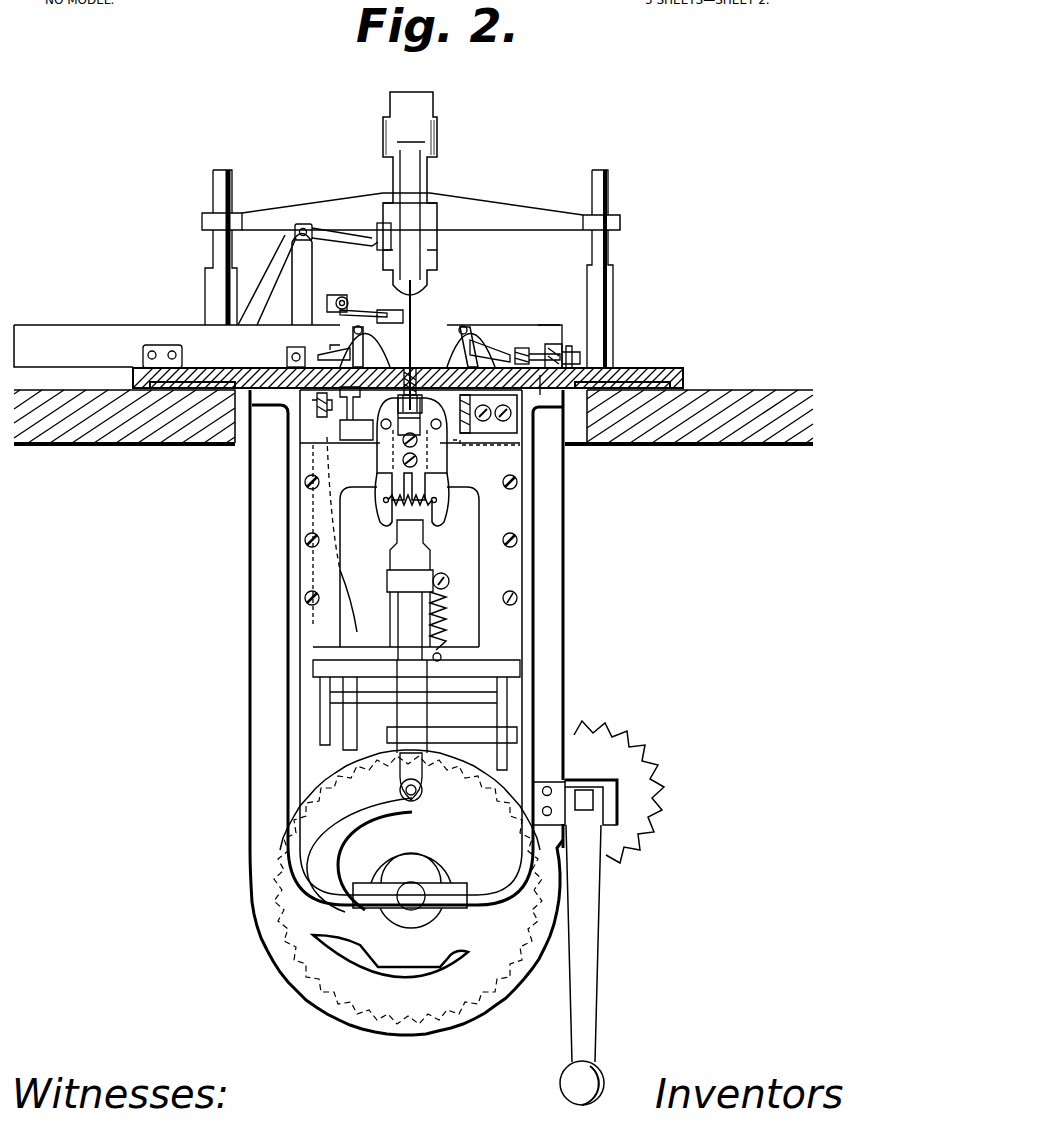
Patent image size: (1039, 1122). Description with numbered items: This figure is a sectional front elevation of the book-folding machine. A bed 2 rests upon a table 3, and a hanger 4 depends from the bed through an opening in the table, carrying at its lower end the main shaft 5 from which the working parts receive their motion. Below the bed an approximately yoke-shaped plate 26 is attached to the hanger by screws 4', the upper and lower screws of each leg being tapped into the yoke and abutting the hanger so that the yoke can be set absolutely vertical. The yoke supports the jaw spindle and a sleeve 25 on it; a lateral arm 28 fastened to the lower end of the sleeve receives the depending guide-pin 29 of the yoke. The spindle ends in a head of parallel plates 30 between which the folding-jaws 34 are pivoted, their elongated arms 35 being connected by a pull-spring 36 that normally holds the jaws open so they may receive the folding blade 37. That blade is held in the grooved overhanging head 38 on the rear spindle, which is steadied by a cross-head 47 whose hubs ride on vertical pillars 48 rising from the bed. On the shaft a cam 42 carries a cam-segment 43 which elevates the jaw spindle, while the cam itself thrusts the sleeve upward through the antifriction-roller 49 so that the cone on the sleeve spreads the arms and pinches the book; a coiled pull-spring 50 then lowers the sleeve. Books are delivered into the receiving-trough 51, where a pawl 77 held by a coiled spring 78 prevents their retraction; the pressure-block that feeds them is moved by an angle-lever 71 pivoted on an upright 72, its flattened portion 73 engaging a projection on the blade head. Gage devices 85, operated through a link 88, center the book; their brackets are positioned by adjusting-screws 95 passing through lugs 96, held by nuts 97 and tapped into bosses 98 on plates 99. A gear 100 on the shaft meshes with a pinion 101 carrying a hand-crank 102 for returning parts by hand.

The bed 2 is at (655, 382).
The table 3 is at (692, 430).
The hanger 4 is at (454, 619).
The screws 4' is at (382, 563).
The shaft 5 is at (413, 890).
The sleeve 25 is at (396, 567).
The yoke-shaped plate 26 is at (505, 568).
The lateral arm 28 is at (458, 745).
The guide-pin 29 is at (500, 767).
The parallel plates 30 is at (388, 447).
The folding-jaws 34 is at (410, 409).
The elongated arms 35 is at (385, 487).
The pull-spring 36 is at (432, 497).
The folding blade 37 is at (420, 320).
The overhanging head 38 is at (410, 180).
The cam 42 is at (483, 1005).
The cam-segment 43 is at (425, 985).
The cross-head 47 is at (488, 210).
The vertical pillars 48 is at (218, 250).
The antifriction-roller 49 is at (359, 855).
The coiled pull-spring 50 is at (446, 620).
The receiving-trough 51 is at (287, 346).
The angle-lever 71 is at (280, 264).
The upright 72 is at (308, 296).
The flattened portion 73 is at (378, 232).
The pawl 77 is at (333, 333).
The coiled spring 78 is at (346, 310).
The gage devices 85 is at (448, 325).
The link 88 is at (248, 447).
The adjusting-screws 95 is at (585, 355).
The lugs 96 is at (560, 350).
The holding and check nuts 97 is at (534, 372).
The bosses 98 is at (535, 368).
The plates 99 is at (503, 372).
The gear 100 is at (340, 995).
The pinion 101 is at (663, 806).
The hand-crank 102 is at (590, 985).